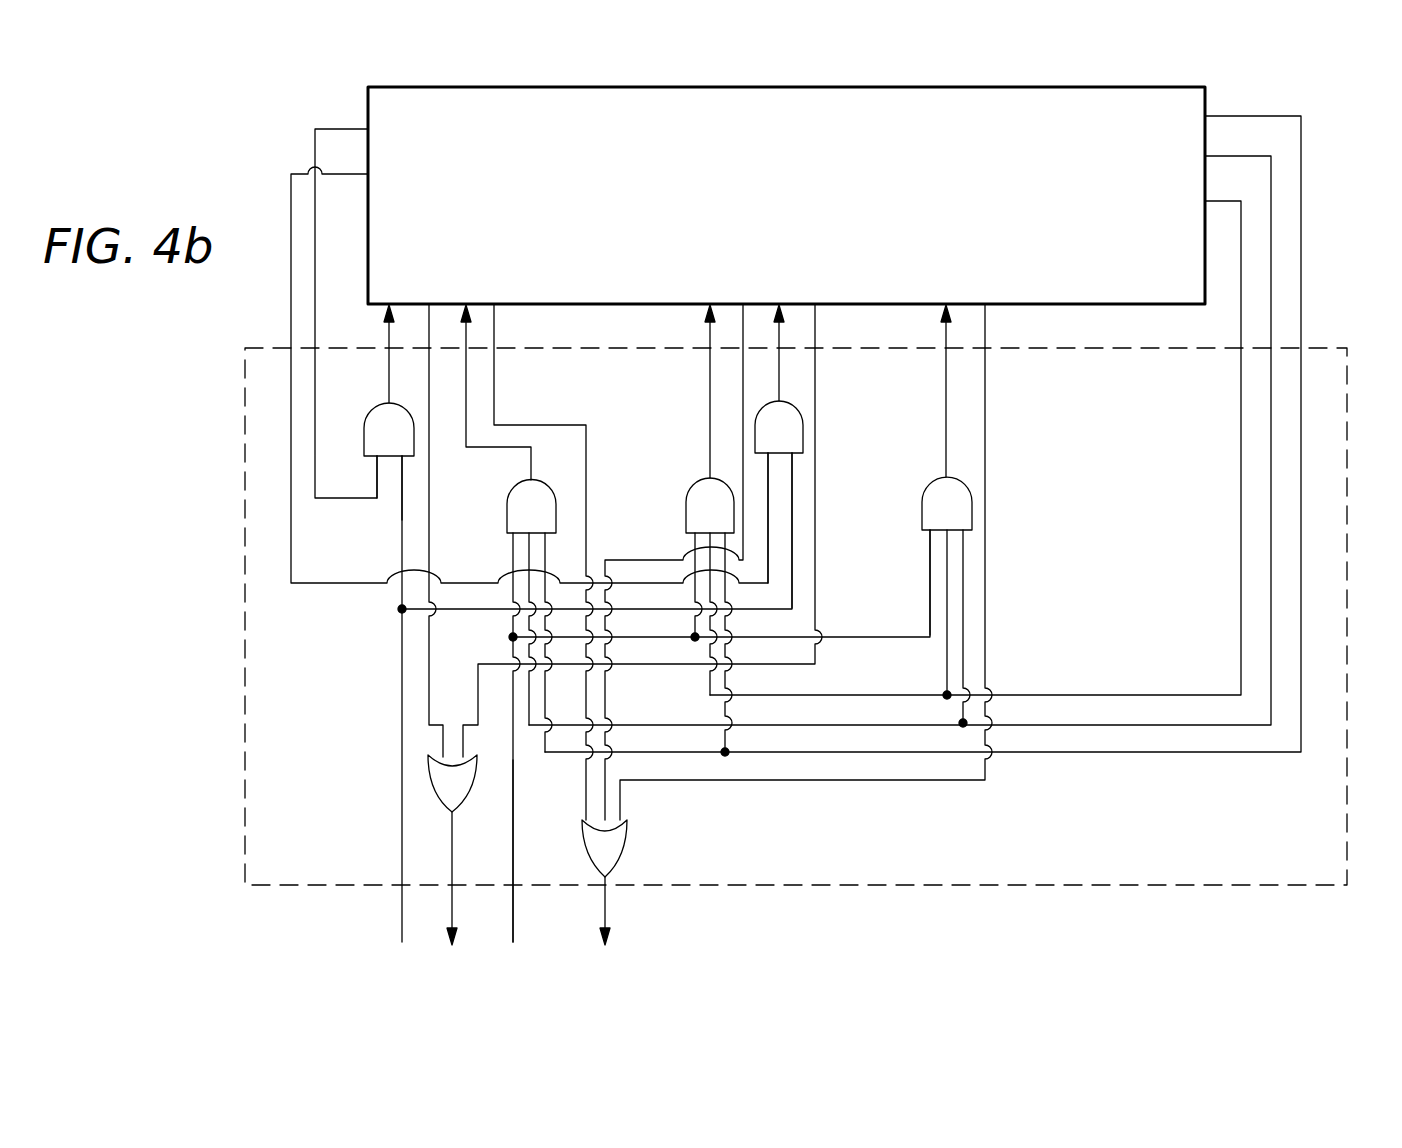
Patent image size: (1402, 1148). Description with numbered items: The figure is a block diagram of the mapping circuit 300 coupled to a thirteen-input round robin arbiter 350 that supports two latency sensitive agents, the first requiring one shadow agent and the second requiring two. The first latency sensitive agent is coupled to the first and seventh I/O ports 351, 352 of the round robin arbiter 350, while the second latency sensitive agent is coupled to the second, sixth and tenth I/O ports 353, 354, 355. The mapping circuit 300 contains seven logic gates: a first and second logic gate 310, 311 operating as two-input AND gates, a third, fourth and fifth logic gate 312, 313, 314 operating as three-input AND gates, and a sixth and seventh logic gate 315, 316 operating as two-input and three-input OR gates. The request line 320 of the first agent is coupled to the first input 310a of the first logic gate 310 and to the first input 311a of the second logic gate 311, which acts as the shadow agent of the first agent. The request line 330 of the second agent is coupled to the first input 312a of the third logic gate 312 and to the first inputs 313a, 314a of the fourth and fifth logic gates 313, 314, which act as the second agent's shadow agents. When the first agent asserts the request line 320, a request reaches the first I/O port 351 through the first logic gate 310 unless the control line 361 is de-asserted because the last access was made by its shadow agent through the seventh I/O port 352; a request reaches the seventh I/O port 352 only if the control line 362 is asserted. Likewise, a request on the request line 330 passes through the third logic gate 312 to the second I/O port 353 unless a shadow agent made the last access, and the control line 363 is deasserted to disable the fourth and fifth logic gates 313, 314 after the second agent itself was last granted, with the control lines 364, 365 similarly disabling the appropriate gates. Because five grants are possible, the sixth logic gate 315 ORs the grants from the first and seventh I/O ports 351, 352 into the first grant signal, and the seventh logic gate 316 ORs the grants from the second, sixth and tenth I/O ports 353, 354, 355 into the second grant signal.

The mapping circuit 300 is at (1193, 885).
The first logic gate 310 is at (365, 430).
The first input of the first logic gate 310a is at (405, 457).
The second logic gate 311 is at (800, 406).
The first input of the second logic gate 311a is at (797, 452).
The third logic gate 312 is at (507, 514).
The first input of the third logic gate 312a is at (512, 535).
The fourth logic gate 313 is at (688, 492).
The first input of the fourth logic gate 313a is at (688, 534).
The fifth logic gate 314 is at (925, 486).
The first input of the fifth logic gate 314a is at (925, 532).
The sixth logic gate 315 is at (428, 780).
The seventh logic gate 316 is at (627, 838).
The request line 320 is at (402, 852).
The request line 330 is at (515, 847).
The round robin arbiter 350 is at (1083, 86).
The first I/O port 351 is at (410, 258).
The seventh I/O port 352 is at (803, 258).
The second I/O port 353 is at (488, 258).
The sixth I/O port 354 is at (732, 258).
The tenth I/O port 355 is at (978, 258).
The control line 361 is at (315, 128).
The control line 362 is at (291, 172).
The control line 363 is at (1241, 264).
The control line 364 is at (1271, 238).
The control line 365 is at (1301, 196).